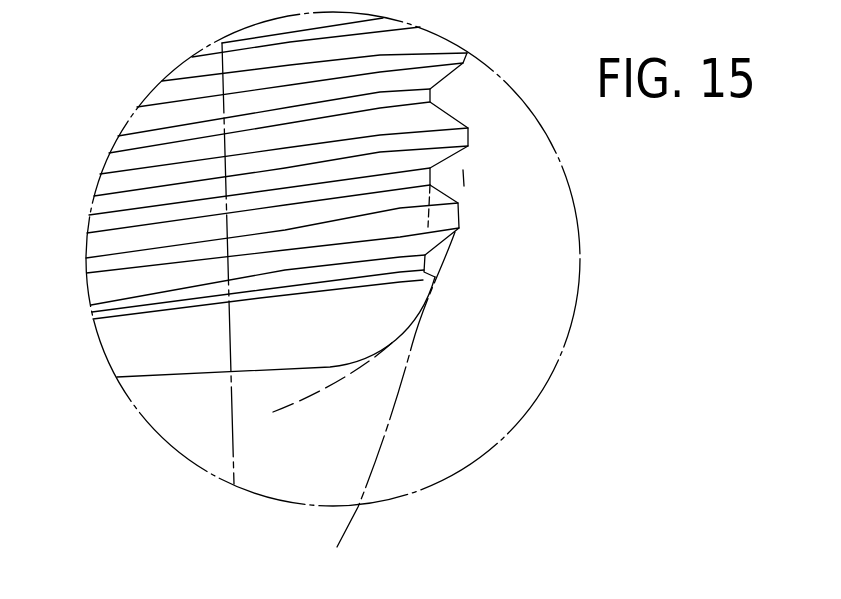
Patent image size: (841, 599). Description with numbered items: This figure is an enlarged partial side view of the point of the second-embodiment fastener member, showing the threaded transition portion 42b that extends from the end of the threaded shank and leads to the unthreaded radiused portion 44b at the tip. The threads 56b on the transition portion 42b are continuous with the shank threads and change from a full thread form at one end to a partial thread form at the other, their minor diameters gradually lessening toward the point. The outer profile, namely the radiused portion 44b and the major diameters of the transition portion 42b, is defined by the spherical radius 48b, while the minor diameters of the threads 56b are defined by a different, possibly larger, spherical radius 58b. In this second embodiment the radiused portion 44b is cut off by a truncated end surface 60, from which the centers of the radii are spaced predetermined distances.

The threaded transition portion 42b is at (114, 265).
The radiused portion 44b is at (142, 346).
The spherical radius 48b is at (463, 176).
The threads 56b is at (127, 181).
The spherical radius 58b is at (390, 424).
The truncated end surface 60 is at (190, 376).